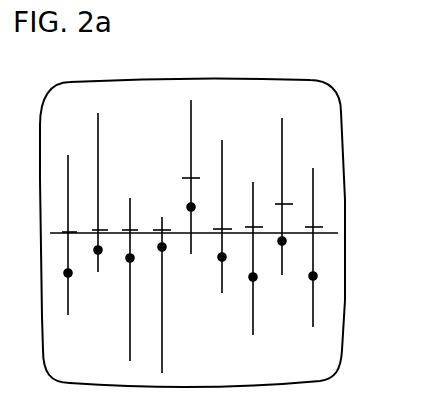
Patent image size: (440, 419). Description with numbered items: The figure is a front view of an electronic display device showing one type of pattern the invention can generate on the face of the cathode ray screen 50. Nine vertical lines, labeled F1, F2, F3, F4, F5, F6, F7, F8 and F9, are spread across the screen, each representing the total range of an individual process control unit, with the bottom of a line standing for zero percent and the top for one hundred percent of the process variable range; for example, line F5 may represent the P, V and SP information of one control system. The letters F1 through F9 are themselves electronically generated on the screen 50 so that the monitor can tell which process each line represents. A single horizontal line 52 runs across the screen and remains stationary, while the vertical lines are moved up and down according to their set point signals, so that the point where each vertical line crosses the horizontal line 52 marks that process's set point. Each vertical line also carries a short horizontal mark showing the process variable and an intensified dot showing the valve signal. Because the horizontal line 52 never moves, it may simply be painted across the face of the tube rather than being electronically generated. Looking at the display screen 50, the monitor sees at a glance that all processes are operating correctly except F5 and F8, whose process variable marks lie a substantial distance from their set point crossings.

The cathode ray screen 50 is at (342, 132).
The horizontal line 52 is at (62, 233).
The process line F1 is at (68, 220).
The process line F2 is at (97, 181).
The process line F3 is at (128, 268).
The process line F4 is at (160, 281).
The process line F5 is at (198, 172).
The process line F6 is at (222, 204).
The process line F7 is at (252, 247).
The process line F8 is at (281, 184).
The process line F9 is at (313, 236).